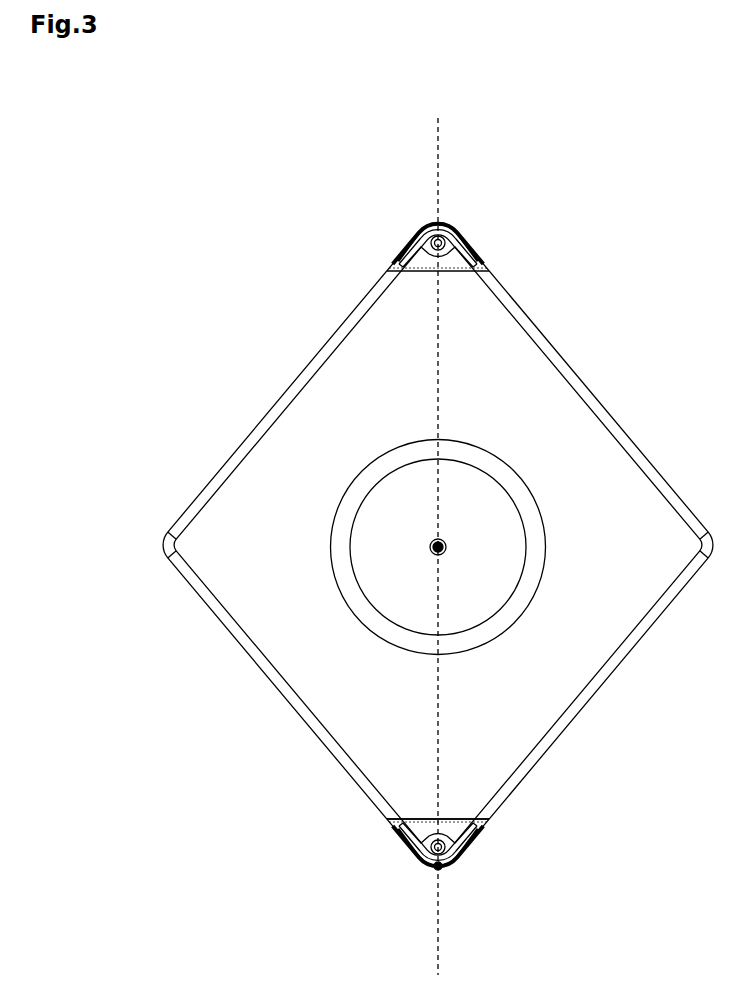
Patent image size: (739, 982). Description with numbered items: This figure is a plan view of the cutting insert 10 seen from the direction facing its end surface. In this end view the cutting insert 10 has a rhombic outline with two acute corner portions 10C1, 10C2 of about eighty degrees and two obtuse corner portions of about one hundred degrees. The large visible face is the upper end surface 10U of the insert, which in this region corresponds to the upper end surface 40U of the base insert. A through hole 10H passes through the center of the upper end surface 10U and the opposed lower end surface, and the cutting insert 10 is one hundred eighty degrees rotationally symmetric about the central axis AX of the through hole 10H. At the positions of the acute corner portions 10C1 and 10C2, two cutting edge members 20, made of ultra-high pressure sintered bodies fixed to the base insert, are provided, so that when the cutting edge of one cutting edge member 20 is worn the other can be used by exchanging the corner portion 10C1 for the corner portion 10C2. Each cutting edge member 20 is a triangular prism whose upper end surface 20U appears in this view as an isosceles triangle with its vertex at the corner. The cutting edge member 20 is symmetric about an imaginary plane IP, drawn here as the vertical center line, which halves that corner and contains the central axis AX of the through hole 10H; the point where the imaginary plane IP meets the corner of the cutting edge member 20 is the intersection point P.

The imaginary plane IP is at (440, 166).
The cutting insert 10 is at (438, 588).
The upper end surface 10U is at (438, 545).
The upper end surface of base insert 40U is at (517, 358).
The through hole 10H is at (420, 459).
The central axis AX is at (441, 539).
The cutting edge member 20 is at (593, 215).
The corner portion 10C2 is at (465, 239).
The corner portion 10C1 is at (478, 850).
The upper end surface of cutting edge member 20U is at (401, 848).
The intersection point P is at (436, 868).